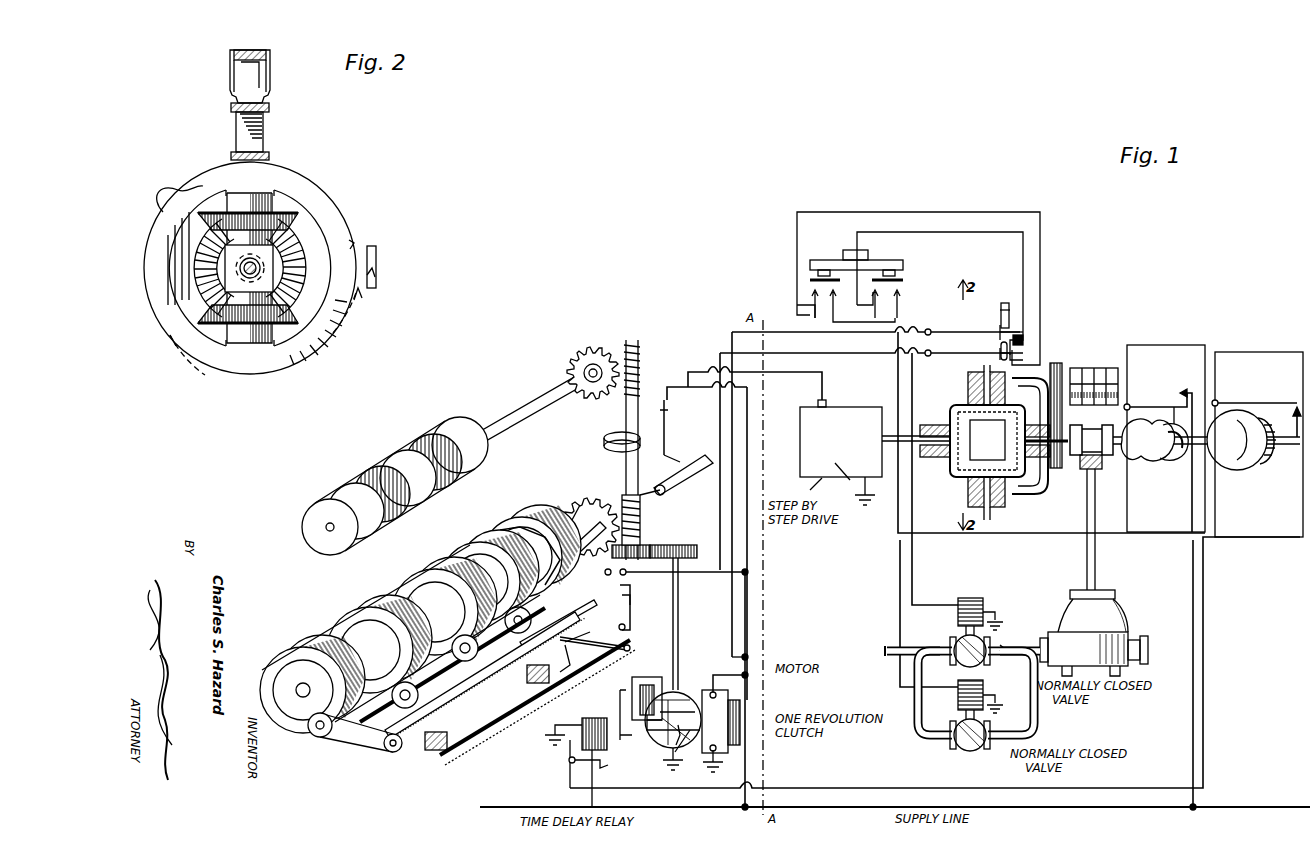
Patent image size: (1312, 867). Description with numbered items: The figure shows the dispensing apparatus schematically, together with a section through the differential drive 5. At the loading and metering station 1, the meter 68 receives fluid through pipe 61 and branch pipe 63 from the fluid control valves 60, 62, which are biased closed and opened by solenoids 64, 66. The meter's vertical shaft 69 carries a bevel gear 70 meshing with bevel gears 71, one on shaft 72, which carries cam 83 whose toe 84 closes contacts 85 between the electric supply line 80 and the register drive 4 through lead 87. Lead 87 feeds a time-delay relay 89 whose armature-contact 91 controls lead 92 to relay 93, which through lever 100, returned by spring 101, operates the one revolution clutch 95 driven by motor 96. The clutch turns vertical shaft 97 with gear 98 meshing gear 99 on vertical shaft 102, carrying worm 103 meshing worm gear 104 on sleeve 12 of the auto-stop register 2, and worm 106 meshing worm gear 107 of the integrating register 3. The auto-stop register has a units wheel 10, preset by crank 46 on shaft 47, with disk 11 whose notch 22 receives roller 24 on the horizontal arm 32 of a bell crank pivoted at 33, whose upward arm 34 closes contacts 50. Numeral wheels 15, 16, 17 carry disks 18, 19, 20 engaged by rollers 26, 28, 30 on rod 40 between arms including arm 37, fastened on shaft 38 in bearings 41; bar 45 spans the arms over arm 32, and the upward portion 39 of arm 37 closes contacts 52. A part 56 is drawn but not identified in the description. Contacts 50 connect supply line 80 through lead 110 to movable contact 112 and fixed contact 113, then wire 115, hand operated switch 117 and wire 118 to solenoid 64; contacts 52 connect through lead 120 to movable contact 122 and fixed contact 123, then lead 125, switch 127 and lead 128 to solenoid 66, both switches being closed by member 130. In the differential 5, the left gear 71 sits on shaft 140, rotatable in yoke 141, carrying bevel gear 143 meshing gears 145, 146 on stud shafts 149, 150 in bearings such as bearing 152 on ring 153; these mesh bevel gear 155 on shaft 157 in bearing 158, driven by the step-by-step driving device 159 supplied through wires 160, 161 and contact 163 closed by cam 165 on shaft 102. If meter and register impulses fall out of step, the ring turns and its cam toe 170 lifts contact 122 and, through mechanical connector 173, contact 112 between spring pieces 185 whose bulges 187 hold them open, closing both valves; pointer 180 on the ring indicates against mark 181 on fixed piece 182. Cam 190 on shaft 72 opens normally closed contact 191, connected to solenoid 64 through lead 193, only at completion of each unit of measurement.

In FIG. 1, the meter and flow control valves 1 is at (1120, 590).
In FIG. 1, the auto-stop register 2 is at (374, 595).
In FIG. 1, the integrating register 3 is at (387, 455).
In FIG. 1, the register drive 4 is at (755, 731).
In FIG. 1, the differential drive 5 is at (1050, 375).
In FIG. 1, the units wheel 10 is at (520, 518).
In FIG. 1, the disk 11 is at (490, 532).
In FIG. 1, the sleeve 12 is at (575, 530).
In FIG. 1, the numeral wheel 15 is at (445, 575).
In FIG. 1, the numeral wheel 16 is at (375, 612).
In FIG. 1, the numeral wheel 17 is at (292, 650).
In FIG. 1, the disk 18 is at (420, 588).
In FIG. 1, the disk 19 is at (355, 625).
In FIG. 1, the disk 20 is at (280, 735).
In FIG. 1, the notch 22 is at (468, 552).
In FIG. 1, the roller 24 is at (518, 606).
In FIG. 1, the roller 26 is at (500, 710).
In FIG. 1, the roller 28 is at (380, 748).
In FIG. 1, the roller 30 is at (312, 738).
In FIG. 1, the horizontally extending arm 32 is at (600, 595).
In FIG. 1, the pivot 33 is at (626, 627).
In FIG. 1, the upwardly extending arm 34 is at (632, 590).
In FIG. 1, the arm 37 is at (475, 690).
In FIG. 1, the shaft 38 is at (470, 712).
In FIG. 1, the upwardly extending portion 39 is at (573, 672).
In FIG. 1, the rod 40 is at (420, 690).
In FIG. 1, the bearings 41 is at (540, 685).
In FIG. 1, the bar 45 is at (465, 722).
In FIG. 1, the crank 46 is at (705, 470).
In FIG. 1, the shaft 47 is at (665, 497).
In FIG. 1, the contacts 50 is at (606, 572).
In FIG. 1, the contacts 52 is at (610, 660).
In FIG. 1, the belt 56 is at (368, 748).
In FIG. 1, the fluid control valve 60 is at (970, 748).
In FIG. 1, the pipe 61 is at (887, 630).
In FIG. 1, the fluid control valve 62 is at (960, 662).
In FIG. 1, the branch pipe 63 is at (1040, 715).
In FIG. 1, the solenoid 64 is at (958, 697).
In FIG. 1, the solenoid 66 is at (983, 600).
In FIG. 1, the meter 68 is at (1130, 615).
In FIG. 1, the vertical shaft 69 is at (1100, 555).
In FIG. 1, the bevel gear 70 is at (1098, 493).
In FIG. 1, the bevel gears 71 is at (1090, 425).
In FIG. 1, the shaft 72 is at (1140, 460).
In FIG. 1, the electric supply line 80 is at (836, 812).
In FIG. 1, the cam 83 is at (1172, 458).
In FIG. 1, the toe 84 is at (1178, 426).
In FIG. 1, the contacts 85 is at (1172, 405).
In FIG. 1, the lead 87 is at (806, 795).
In FIG. 1, the time-delay relay 89 is at (582, 722).
In FIG. 1, the armature-contact 91 is at (565, 763).
In FIG. 1, the lead 92 is at (620, 702).
In FIG. 1, the relay 93 is at (647, 677).
In FIG. 1, the one revolution clutch 95 is at (655, 732).
In FIG. 1, the motor 96 is at (702, 685).
In FIG. 1, the vertical shaft 97 is at (680, 615).
In FIG. 1, the gear 98 is at (688, 545).
In FIG. 1, the gear 99 is at (640, 530).
In FIG. 1, the lever 100 is at (682, 748).
In FIG. 1, the spring 101 is at (655, 745).
In FIG. 1, the vertical shaft 102 is at (620, 452).
In FIG. 1, the worm 103 is at (608, 490).
In FIG. 1, the worm gear 104 is at (572, 508).
In FIG. 1, the worm 106 is at (640, 340).
In FIG. 1, the worm gear 107 is at (597, 345).
In FIG. 1, the lead 110 is at (782, 340).
In FIG. 2, the movable contact 112 is at (269, 108).
In FIG. 1, the movable contact 112 is at (985, 332).
In FIG. 1, the fixed contact 113 is at (1023, 345).
In FIG. 1, the wire 115 is at (990, 230).
In FIG. 1, the hand operated switch 117 is at (905, 278).
In FIG. 1, the wire 118 is at (897, 565).
In FIG. 1, the lead 120 is at (805, 352).
In FIG. 2, the movable contact 122 is at (269, 156).
In FIG. 1, the movable contact 122 is at (975, 350).
In FIG. 1, the fixed contact 123 is at (1018, 363).
In FIG. 1, the lead 125 is at (960, 190).
In FIG. 1, the hand operated switch 127 is at (803, 277).
In FIG. 1, the lead 128 is at (913, 575).
In FIG. 1, the member 130 is at (848, 250).
In FIG. 2, the shaft 140 is at (238, 302).
In FIG. 1, the shaft 140 is at (1049, 480).
In FIG. 1, the yoke 141 is at (1040, 495).
In FIG. 2, the bevel gear 143 is at (228, 282).
In FIG. 1, the bevel gear 143 is at (1040, 505).
In FIG. 2, the bevel gear 145 is at (290, 215).
In FIG. 1, the bevel gear 145 is at (968, 390).
In FIG. 2, the bevel gear 146 is at (240, 292).
In FIG. 1, the bevel gear 146 is at (965, 480).
In FIG. 1, the stud shaft 149 is at (975, 372).
In FIG. 1, the stud shaft 150 is at (985, 520).
In FIG. 1, the bearing 152 is at (1005, 510).
In FIG. 2, the ring 153 is at (318, 205).
In FIG. 1, the ring 153 is at (995, 510).
In FIG. 1, the bevel gear 155 is at (952, 420).
In FIG. 2, the shaft 157 is at (255, 292).
In FIG. 1, the shaft 157 is at (932, 480).
In FIG. 1, the bearing 158 is at (935, 455).
In FIG. 1, the step-by-step driving device 159 is at (852, 405).
In FIG. 1, the wire 160 is at (752, 390).
In FIG. 1, the wire 161 is at (820, 374).
In FIG. 1, the contact 163 is at (660, 400).
In FIG. 1, the cam 165 is at (604, 441).
In FIG. 2, the cam toe 170 is at (184, 192).
In FIG. 2, the mechanical connector 173 is at (263, 131).
In FIG. 1, the mechanical connector 173 is at (1015, 336).
In FIG. 2, the pointer 180 is at (355, 235).
In FIG. 2, the mark 181 is at (375, 277).
In FIG. 2, the fixed piece 182 is at (370, 255).
In FIG. 2, the spring pieces 185 is at (233, 72).
In FIG. 1, the spring pieces 185 is at (1009, 310).
In FIG. 2, the bulges 187 is at (248, 65).
In FIG. 1, the bulges 187 is at (1012, 322).
In FIG. 1, the cam 190 is at (1232, 470).
In FIG. 1, the normally closed contact 191 is at (1260, 402).
In FIG. 1, the lead 193 is at (1260, 537).